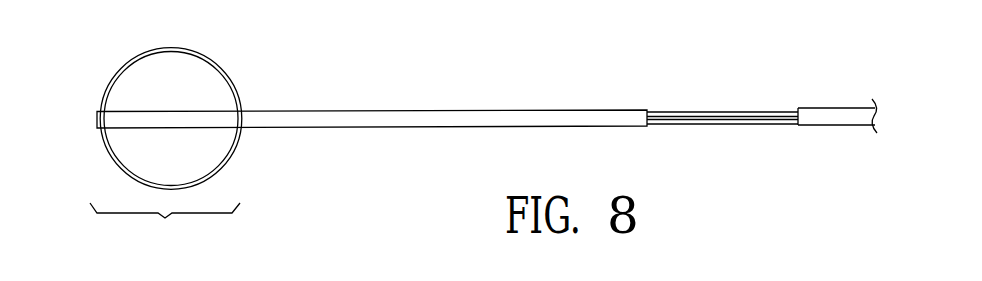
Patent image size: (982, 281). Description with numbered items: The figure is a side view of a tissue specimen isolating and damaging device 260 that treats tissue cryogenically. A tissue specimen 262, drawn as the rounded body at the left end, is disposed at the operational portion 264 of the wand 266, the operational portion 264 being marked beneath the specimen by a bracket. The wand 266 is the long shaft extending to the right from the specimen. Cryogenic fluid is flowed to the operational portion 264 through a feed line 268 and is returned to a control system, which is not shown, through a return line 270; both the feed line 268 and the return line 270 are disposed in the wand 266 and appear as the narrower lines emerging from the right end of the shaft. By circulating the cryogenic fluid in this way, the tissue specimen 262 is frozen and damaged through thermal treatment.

The tissue specimen isolating and damaging device 260 is at (461, 104).
The tissue specimen 262 is at (232, 86).
The operational portion 264 is at (165, 225).
The wand 266 is at (368, 128).
The feed line 268 is at (710, 112).
The return line 270 is at (710, 125).